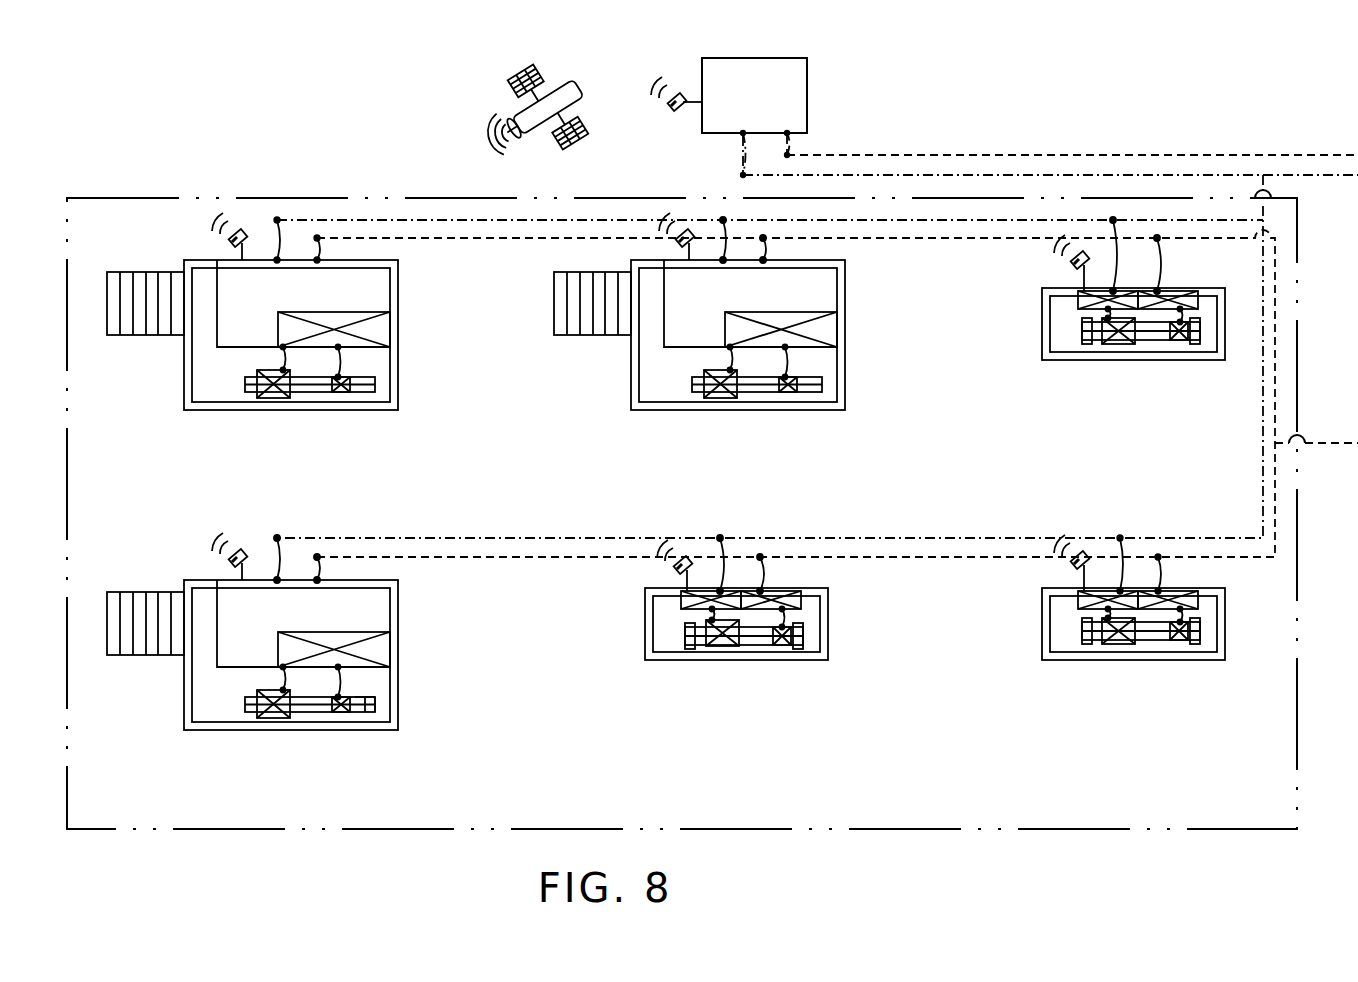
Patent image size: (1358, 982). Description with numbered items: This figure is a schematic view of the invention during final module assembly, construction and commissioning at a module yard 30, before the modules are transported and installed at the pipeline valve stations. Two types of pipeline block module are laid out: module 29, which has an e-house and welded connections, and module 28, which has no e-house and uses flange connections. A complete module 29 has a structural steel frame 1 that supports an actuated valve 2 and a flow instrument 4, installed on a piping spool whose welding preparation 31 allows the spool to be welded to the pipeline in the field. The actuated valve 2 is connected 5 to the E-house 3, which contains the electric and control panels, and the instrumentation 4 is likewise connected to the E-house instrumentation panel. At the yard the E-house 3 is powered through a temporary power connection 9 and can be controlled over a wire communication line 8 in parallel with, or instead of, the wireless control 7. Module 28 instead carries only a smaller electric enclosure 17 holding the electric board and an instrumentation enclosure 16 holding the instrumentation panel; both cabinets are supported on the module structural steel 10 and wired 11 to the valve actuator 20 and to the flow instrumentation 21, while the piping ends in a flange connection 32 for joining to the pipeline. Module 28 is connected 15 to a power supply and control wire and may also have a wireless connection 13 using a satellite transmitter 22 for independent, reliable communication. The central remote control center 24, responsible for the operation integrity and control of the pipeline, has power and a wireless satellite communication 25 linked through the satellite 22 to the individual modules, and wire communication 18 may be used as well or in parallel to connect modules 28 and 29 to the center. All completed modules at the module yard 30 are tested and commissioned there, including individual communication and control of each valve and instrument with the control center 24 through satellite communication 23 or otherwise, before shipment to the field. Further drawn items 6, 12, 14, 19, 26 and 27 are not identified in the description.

The structural steel frame 1 is at (274, 648).
The actuated valve 2 is at (273, 712).
The E-house 3 is at (228, 653).
The flow instrument 4 is at (342, 707).
The connection 5 is at (302, 713).
The pipe connection 6 is at (367, 723).
The wireless control 7 is at (233, 555).
The wire communication line 8 is at (277, 538).
The temporary power connection 9 is at (317, 557).
The module structural steel 10 is at (735, 616).
The wiring 11 is at (693, 623).
The flow meter 12 is at (787, 627).
The wireless connection 13 is at (680, 570).
The control line connection 14 is at (720, 538).
The connection 15 is at (760, 557).
The instrumentation enclosure 16 is at (693, 602).
The electric enclosure 17 is at (800, 600).
The wire communication 18 is at (930, 538).
The power line 19 is at (975, 557).
The valve actuator 20 is at (727, 653).
The flow instrumentation 21 is at (785, 657).
The satellite 22 is at (547, 100).
The satellite communication 23 is at (487, 137).
The central remote control center 24 is at (797, 77).
The wireless satellite communication 25 is at (660, 90).
The power line connection 26 is at (790, 143).
The control line connection 27 is at (740, 153).
The module 28 is at (1063, 648).
The module 29 is at (210, 382).
The module yard 30 is at (1150, 798).
The welding preparation 31 is at (372, 695).
The flange connection 32 is at (810, 653).